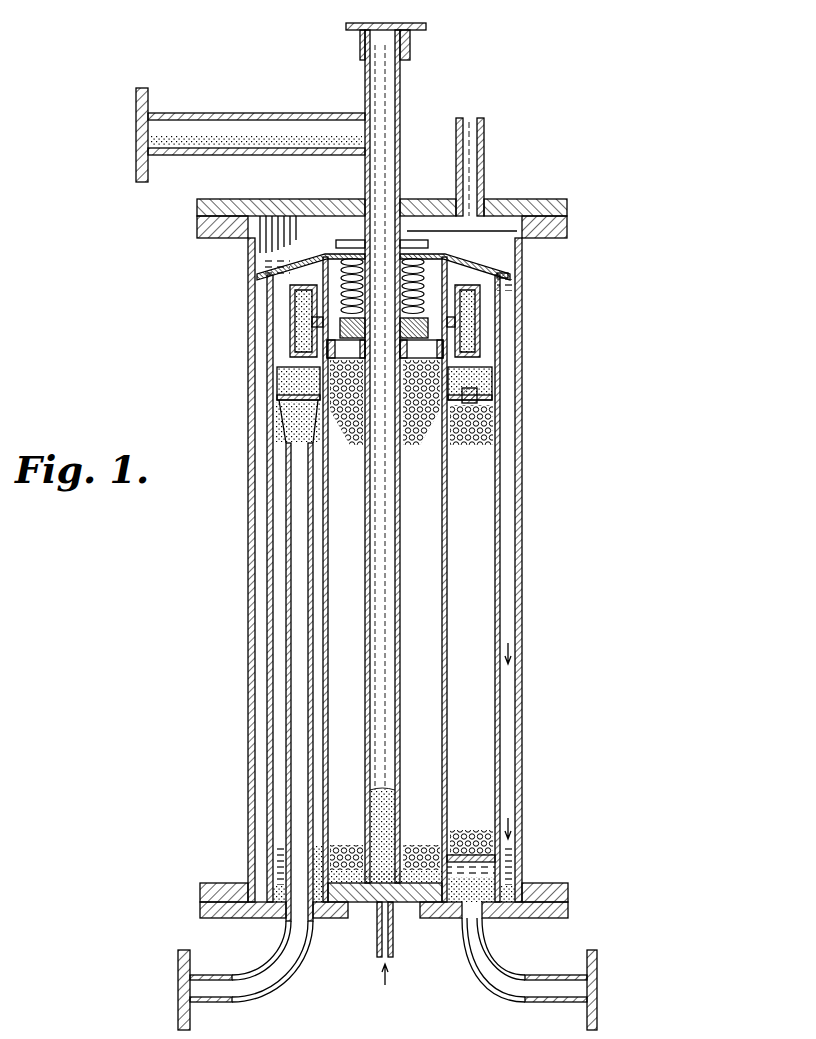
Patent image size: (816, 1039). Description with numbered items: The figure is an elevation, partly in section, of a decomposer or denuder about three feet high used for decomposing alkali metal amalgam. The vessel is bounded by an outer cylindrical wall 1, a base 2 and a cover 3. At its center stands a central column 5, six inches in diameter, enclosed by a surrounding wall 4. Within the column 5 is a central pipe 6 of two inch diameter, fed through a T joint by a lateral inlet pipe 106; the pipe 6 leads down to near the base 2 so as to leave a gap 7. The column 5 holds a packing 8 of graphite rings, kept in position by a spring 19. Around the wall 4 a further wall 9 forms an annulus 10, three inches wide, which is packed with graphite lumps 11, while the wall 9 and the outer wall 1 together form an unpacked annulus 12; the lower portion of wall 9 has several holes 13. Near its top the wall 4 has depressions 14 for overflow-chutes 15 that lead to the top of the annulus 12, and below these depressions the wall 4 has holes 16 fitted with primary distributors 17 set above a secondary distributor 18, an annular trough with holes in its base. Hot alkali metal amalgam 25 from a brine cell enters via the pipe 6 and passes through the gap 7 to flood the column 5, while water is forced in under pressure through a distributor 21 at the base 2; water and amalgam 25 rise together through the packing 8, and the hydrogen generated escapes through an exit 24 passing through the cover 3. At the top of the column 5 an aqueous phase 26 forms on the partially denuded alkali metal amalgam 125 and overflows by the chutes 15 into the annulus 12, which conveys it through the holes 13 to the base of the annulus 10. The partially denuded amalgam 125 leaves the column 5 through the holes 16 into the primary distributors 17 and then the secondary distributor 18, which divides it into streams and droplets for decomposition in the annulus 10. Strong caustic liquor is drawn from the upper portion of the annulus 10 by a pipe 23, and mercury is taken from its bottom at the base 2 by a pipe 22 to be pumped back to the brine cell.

The outer cylindrical wall 1 is at (407, 570).
The base 2 is at (568, 907).
The cover 3 is at (198, 207).
The surrounding wall 4 is at (447, 545).
The central column 5 is at (437, 595).
The central pipe 6 is at (365, 79).
The gap 7 is at (337, 918).
The packing of graphite rings 8 is at (413, 845).
The wall 9 is at (498, 546).
The annulus 10 is at (280, 632).
The graphite lumps 11 is at (488, 449).
The annulus 12 is at (513, 492).
The holes 13 is at (495, 873).
The depressions 14 is at (446, 249).
The overflow-chutes 15 is at (482, 253).
The holes 16 is at (457, 333).
The primary distributors 17 is at (480, 325).
The secondary distributor 18 is at (487, 392).
The spring 19 is at (357, 240).
The distributor 21 is at (393, 940).
The pipe 22 is at (542, 1002).
The pipe 23 is at (238, 1000).
The exit for gas 24 is at (484, 146).
The alkali metal amalgam 25 is at (235, 147).
The aqueous phase 26 is at (327, 277).
The lateral inlet pipe 106 is at (228, 113).
The partially denuded alkali metal amalgam 125 is at (307, 333).